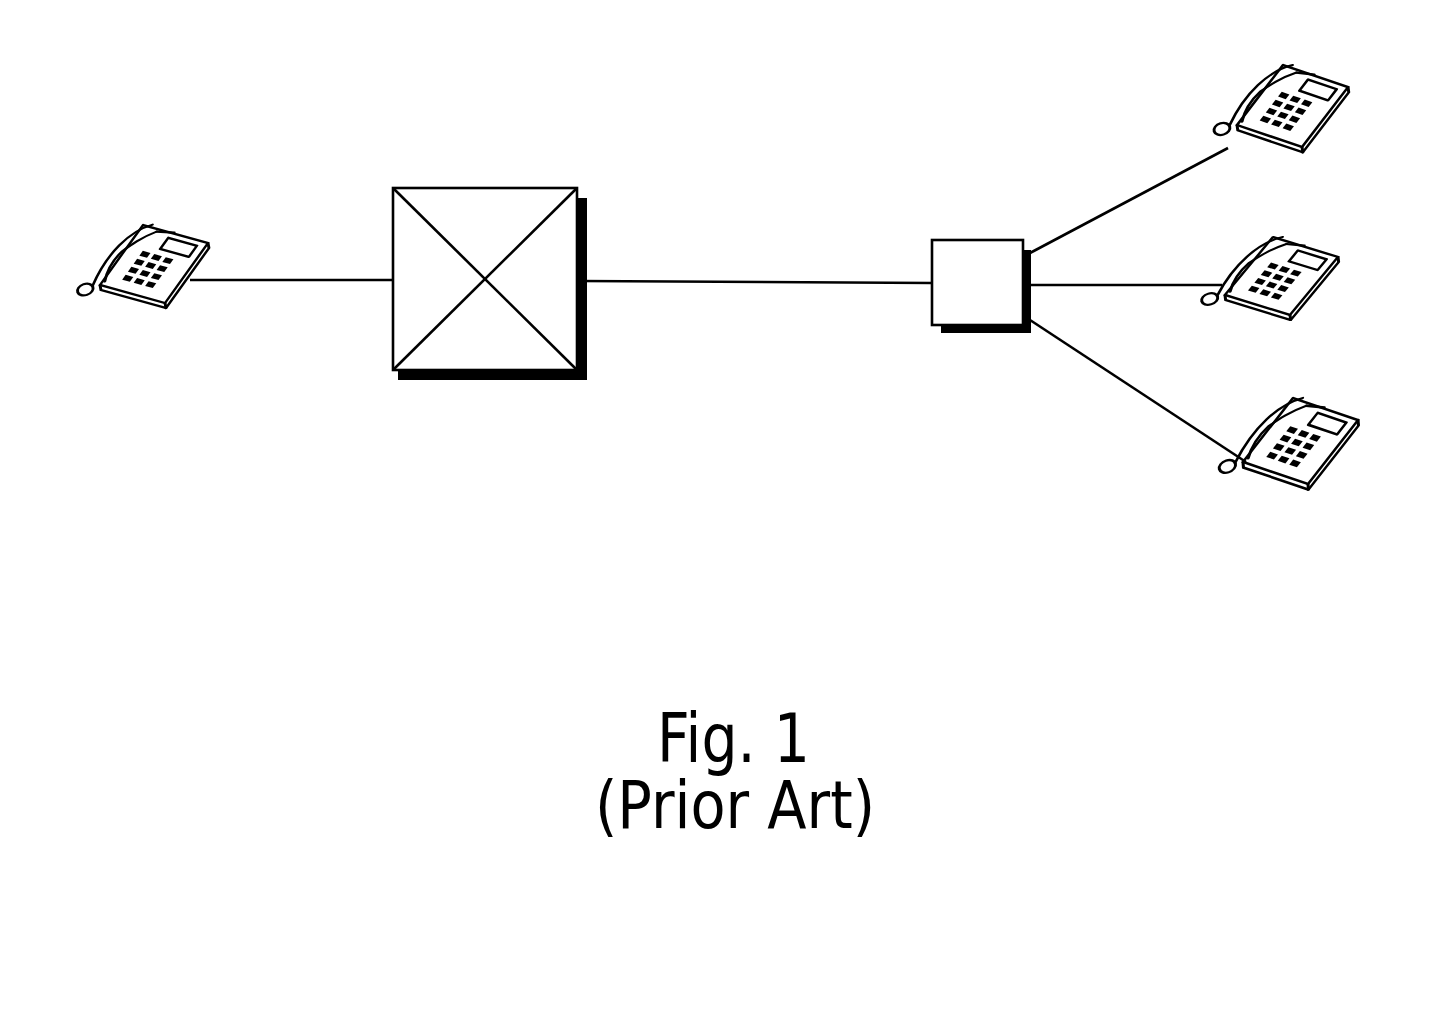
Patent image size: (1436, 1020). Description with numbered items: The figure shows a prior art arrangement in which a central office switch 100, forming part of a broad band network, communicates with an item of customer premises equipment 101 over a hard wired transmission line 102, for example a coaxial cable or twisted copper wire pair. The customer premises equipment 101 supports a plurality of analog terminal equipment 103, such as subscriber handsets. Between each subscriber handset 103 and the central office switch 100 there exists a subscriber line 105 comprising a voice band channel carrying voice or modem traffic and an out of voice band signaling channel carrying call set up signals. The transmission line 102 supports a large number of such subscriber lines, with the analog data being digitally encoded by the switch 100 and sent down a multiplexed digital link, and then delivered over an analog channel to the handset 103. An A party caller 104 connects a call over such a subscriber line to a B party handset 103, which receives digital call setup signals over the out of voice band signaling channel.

The central office switch 100 is at (488, 381).
The customer premises equipment 101 is at (978, 334).
The transmission line 102 is at (755, 284).
The analog terminal equipment 103 is at (1340, 120).
The A party caller 104 is at (150, 316).
The subscriber line 105 is at (1125, 205).